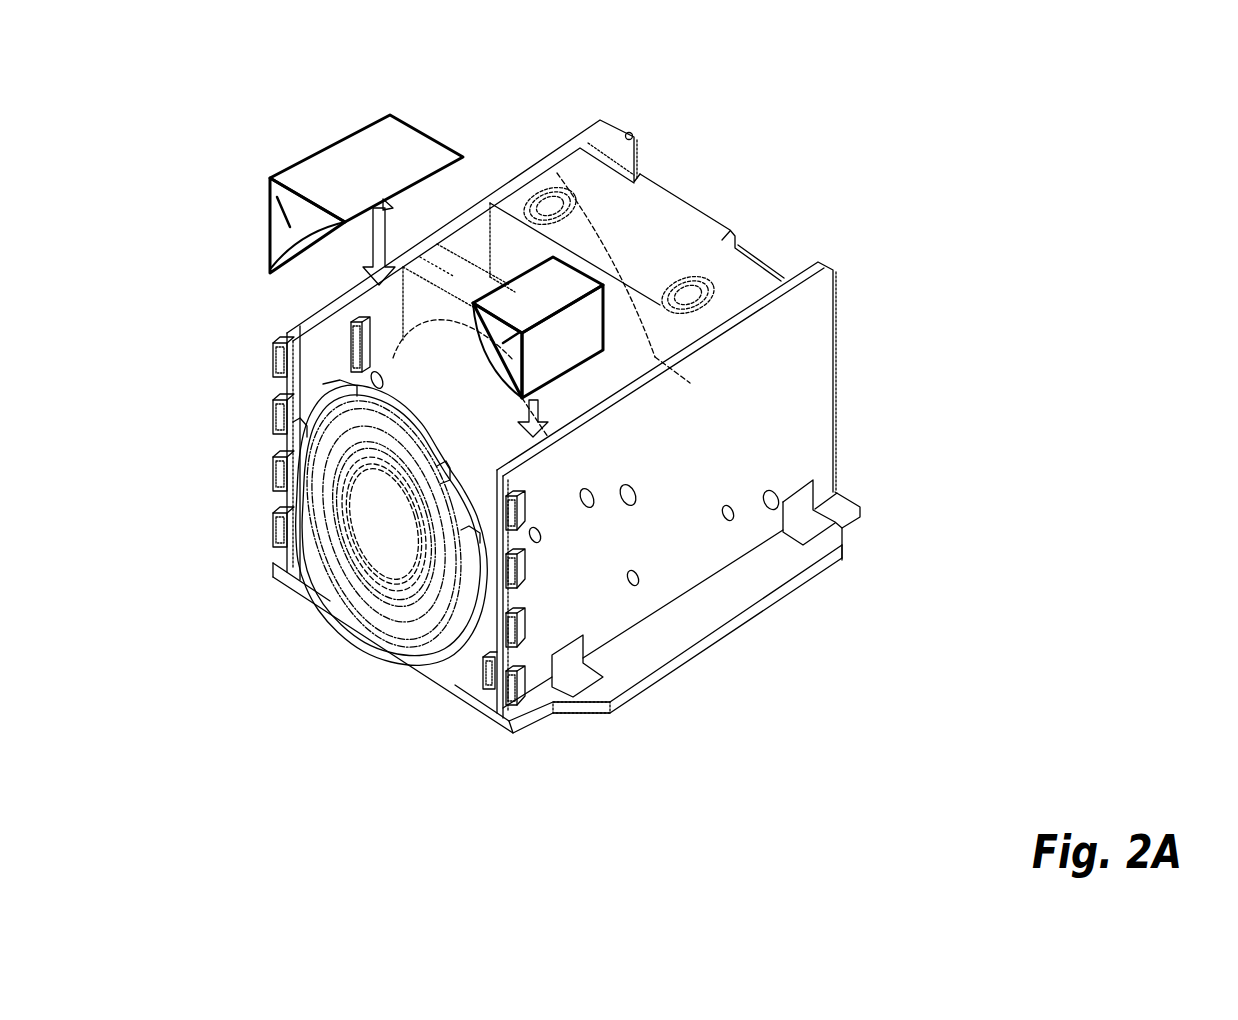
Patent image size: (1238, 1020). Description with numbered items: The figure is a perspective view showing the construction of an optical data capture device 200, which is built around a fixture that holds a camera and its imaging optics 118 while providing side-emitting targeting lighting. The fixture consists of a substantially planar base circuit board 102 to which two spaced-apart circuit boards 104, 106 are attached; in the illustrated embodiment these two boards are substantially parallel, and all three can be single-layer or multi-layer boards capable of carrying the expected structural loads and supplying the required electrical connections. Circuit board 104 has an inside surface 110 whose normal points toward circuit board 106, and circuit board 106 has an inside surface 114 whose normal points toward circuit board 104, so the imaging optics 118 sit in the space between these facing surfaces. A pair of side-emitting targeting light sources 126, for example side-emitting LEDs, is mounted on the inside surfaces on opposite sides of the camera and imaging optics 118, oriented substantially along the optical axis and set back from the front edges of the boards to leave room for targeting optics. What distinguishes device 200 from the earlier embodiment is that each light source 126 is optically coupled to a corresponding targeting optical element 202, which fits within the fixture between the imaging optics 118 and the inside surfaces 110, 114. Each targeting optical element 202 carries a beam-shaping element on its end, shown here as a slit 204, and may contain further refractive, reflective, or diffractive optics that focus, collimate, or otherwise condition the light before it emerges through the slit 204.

The base circuit board 102 is at (703, 617).
The circuit board 104 is at (812, 250).
The circuit board 106 is at (601, 115).
The inside surface 110 is at (661, 362).
The inside surface 114 is at (467, 239).
The imaging optics 118 is at (382, 548).
The side-emitting targeting light source 126 is at (350, 343).
The optical data capture device 200 is at (745, 735).
The targeting optical element 202 is at (347, 167).
The slit 204 is at (277, 213).